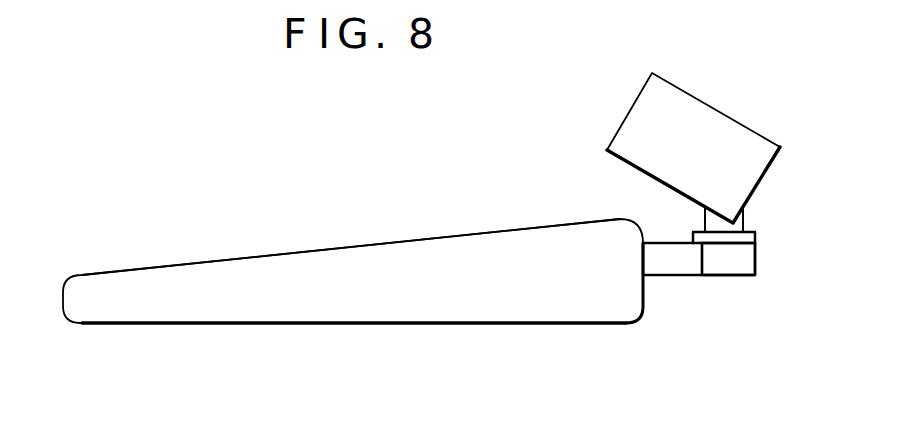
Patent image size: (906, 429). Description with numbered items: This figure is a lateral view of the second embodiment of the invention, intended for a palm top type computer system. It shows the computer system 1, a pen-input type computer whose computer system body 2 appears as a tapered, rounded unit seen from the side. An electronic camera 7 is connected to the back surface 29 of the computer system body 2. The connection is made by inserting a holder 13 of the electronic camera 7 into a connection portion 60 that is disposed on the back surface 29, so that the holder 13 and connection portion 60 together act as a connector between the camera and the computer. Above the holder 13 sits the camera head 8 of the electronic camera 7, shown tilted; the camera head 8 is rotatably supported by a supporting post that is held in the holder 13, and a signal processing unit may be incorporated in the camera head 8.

The computer system 1 is at (365, 224).
The computer system body 2 is at (262, 256).
The electronic camera 7 is at (643, 113).
The camera head 8 is at (712, 122).
The holder 13 is at (748, 257).
The back surface 29 is at (643, 288).
The connection portion 60 is at (652, 252).